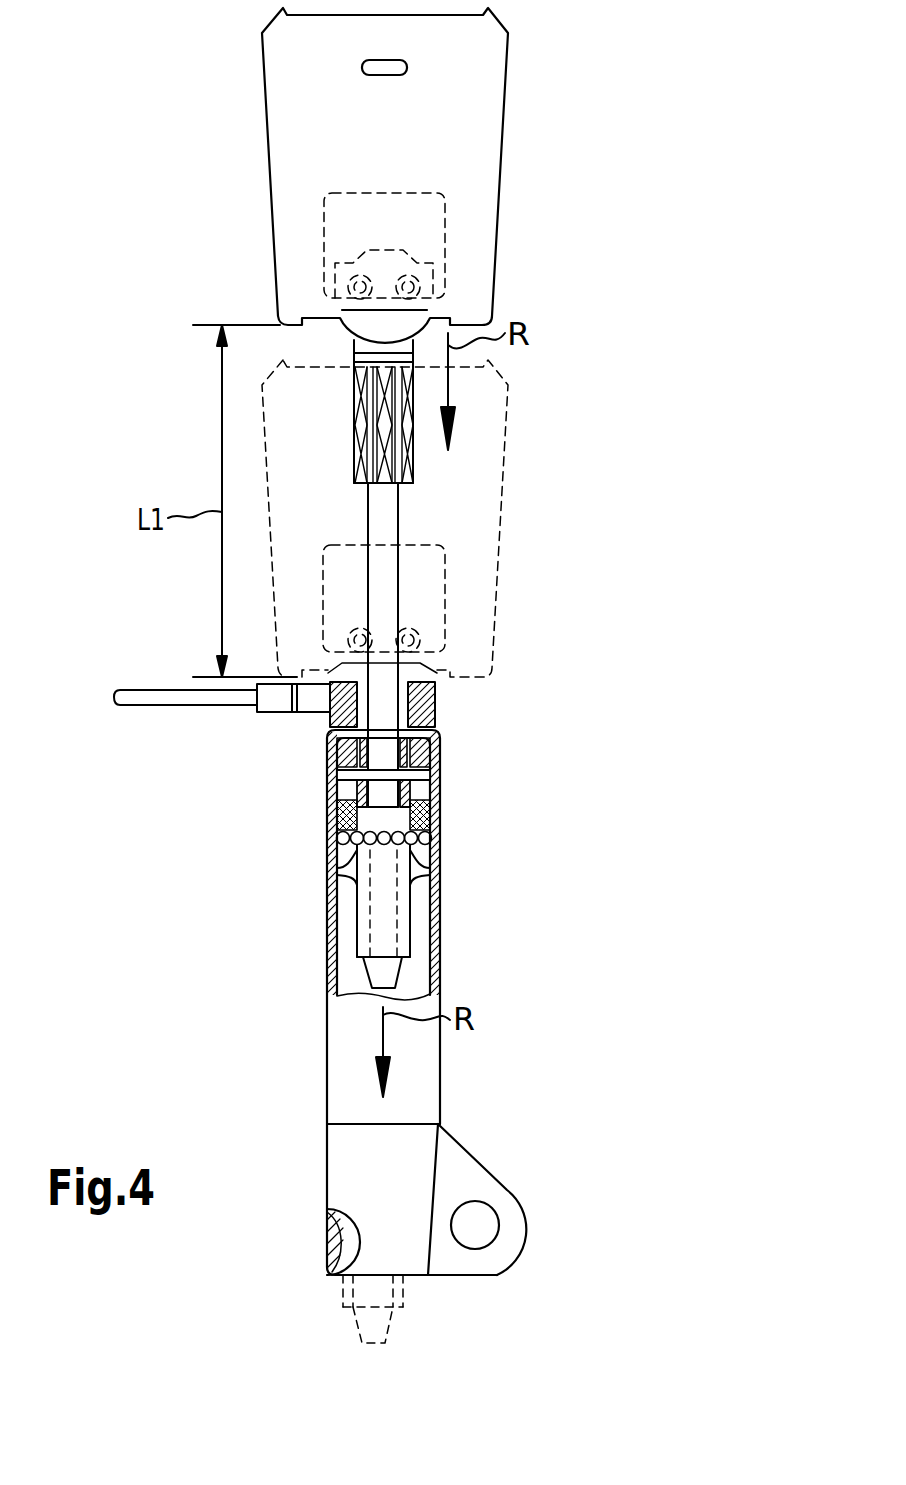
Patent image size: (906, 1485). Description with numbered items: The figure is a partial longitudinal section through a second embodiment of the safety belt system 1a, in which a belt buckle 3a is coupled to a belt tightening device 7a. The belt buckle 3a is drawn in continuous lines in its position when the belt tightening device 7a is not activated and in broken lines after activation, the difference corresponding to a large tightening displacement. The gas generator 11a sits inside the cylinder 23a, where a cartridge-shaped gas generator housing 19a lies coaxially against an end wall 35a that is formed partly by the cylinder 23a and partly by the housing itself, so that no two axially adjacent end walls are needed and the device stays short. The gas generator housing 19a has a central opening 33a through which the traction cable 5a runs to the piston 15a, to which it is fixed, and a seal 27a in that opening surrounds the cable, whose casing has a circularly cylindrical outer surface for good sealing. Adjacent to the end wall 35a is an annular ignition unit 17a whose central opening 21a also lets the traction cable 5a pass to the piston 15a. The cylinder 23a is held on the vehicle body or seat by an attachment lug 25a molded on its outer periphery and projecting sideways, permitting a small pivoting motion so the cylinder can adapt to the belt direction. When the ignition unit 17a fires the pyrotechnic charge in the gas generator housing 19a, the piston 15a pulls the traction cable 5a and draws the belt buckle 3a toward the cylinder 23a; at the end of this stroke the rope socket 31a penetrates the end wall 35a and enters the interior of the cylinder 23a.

The safety belt system 1a is at (617, 680).
The belt buckle 3a is at (487, 105).
The traction cable 5a is at (383, 522).
The belt tightening device 7a is at (466, 918).
The gas generator 11a is at (415, 743).
The piston 15a is at (400, 797).
The ignition unit 17a is at (422, 701).
The gas generator housing 19a is at (343, 757).
The central opening of the ignition unit 21a is at (437, 700).
The cylinder 23a is at (327, 926).
The attachment lug 25a is at (500, 1203).
The seal 27a is at (412, 762).
The rope socket 31a is at (363, 412).
The central opening of the gas generator housing 33a is at (345, 812).
The end wall 35a is at (330, 712).